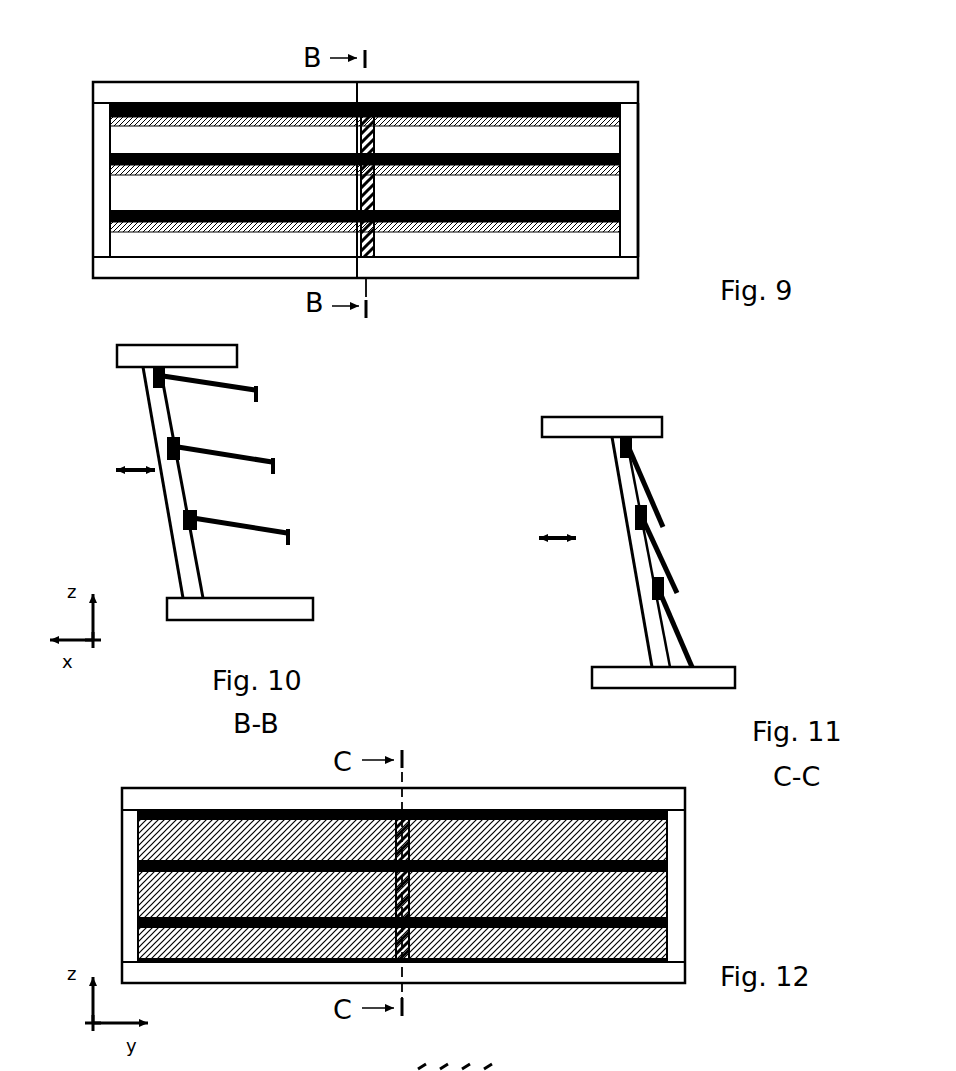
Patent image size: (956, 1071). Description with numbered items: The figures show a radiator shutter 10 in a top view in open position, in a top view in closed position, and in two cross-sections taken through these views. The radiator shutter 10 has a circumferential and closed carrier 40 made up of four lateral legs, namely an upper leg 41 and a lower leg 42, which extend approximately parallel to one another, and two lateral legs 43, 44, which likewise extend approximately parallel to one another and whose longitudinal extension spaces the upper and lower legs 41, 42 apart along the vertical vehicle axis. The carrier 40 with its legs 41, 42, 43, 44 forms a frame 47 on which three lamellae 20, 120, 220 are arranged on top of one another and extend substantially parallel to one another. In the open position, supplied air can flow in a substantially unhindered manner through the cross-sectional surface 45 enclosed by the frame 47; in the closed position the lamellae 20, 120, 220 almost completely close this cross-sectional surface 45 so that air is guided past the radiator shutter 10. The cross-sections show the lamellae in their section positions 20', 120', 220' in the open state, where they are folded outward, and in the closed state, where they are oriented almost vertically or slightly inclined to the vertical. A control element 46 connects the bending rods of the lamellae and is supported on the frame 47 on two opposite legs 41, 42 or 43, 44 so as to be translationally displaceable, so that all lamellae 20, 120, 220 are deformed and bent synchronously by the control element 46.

In FIG. 9, the radiator shutter 10 is at (210, 62).
In FIG. 9, the lamella 20 is at (365, 79).
In FIG. 11, the lamella 20 is at (604, 552).
In FIG. 12, the lamella 20 is at (402, 809).
In FIG. 10, the actuator element (section) 20' is at (159, 482).
In FIG. 9, the lamella 120 is at (365, 111).
In FIG. 11, the lamella 120 is at (603, 549).
In FIG. 12, the lamella 120 is at (402, 951).
In FIG. 10, the actuator element (section) 120' is at (165, 468).
In FIG. 9, the lamella 220 is at (365, 277).
In FIG. 11, the lamella 220 is at (616, 622).
In FIG. 12, the lamella 220 is at (402, 981).
In FIG. 10, the actuator element (section) 220' is at (184, 539).
In FIG. 9, the carrier 40 is at (553, 70).
In FIG. 12, the carrier 40 is at (477, 760).
In FIG. 9, the upper leg 41 is at (494, 88).
In FIG. 10, the upper leg 41 is at (153, 355).
In FIG. 11, the upper leg 41 is at (600, 425).
In FIG. 12, the upper leg 41 is at (523, 793).
In FIG. 9, the lower leg 42 is at (526, 268).
In FIG. 10, the lower leg 42 is at (173, 612).
In FIG. 11, the lower leg 42 is at (611, 675).
In FIG. 12, the lower leg 42 is at (604, 975).
In FIG. 9, the lateral leg 43 is at (102, 190).
In FIG. 12, the lateral leg 43 is at (130, 832).
In FIG. 9, the lateral leg 44 is at (635, 203).
In FIG. 9, the cross-sectional surface 45 is at (583, 187).
In FIG. 9, the control element 46 is at (371, 278).
In FIG. 12, the control element 46 is at (410, 980).
In FIG. 9, the frame 47 is at (648, 132).
In FIG. 12, the frame 47 is at (697, 853).